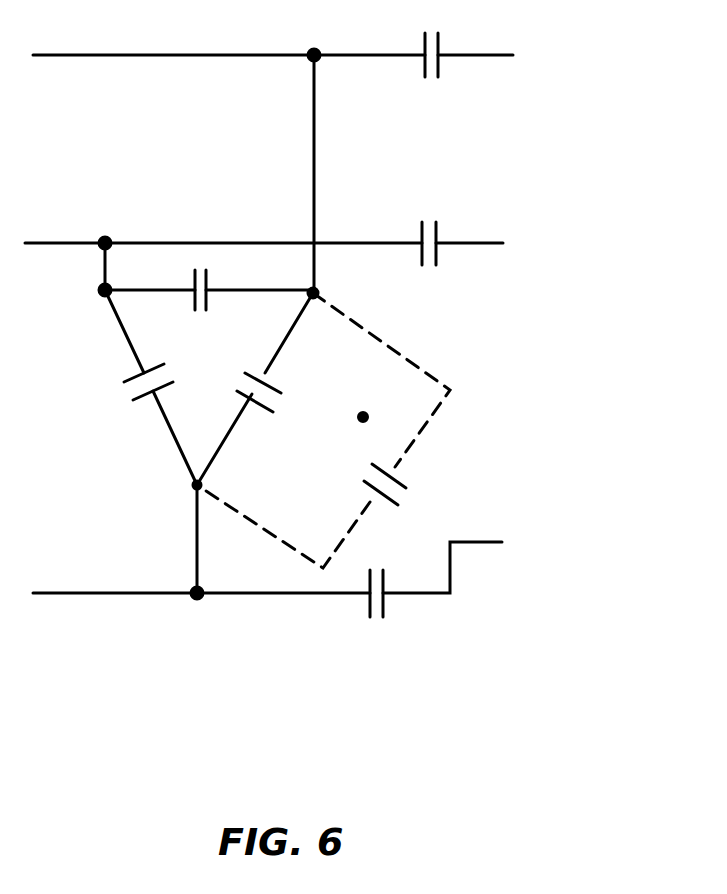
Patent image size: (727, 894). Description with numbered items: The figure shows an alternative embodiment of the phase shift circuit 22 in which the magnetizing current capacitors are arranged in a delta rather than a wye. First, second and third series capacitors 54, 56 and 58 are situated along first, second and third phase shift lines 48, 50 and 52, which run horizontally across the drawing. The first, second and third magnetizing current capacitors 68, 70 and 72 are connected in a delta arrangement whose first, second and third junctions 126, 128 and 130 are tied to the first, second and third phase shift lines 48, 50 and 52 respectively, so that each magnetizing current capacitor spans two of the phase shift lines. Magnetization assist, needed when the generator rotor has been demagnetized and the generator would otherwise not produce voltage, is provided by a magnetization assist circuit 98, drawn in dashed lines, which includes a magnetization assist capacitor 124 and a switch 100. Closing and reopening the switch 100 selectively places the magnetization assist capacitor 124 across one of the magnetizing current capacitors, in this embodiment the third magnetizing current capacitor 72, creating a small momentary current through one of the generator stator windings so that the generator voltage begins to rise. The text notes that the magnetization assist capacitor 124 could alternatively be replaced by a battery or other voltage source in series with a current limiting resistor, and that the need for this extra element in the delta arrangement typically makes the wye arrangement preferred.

The phase shift circuit 22 is at (583, 128).
The first phase shift line 48 is at (162, 54).
The second phase shift line 50 is at (180, 242).
The third phase shift line 52 is at (130, 596).
The first series capacitor 54 is at (441, 45).
The second series capacitor 56 is at (440, 233).
The third series capacitor 58 is at (386, 603).
The first magnetizing current capacitor 68 is at (143, 406).
The second magnetizing current capacitor 70 is at (208, 289).
The third magnetizing current capacitor 72 is at (243, 398).
The magnetization assist circuit 98 is at (461, 389).
The switch 100 is at (440, 393).
The magnetization assist capacitor 124 is at (405, 472).
The first junction 126 is at (318, 290).
The second junction 128 is at (100, 295).
The third junction 130 is at (192, 491).